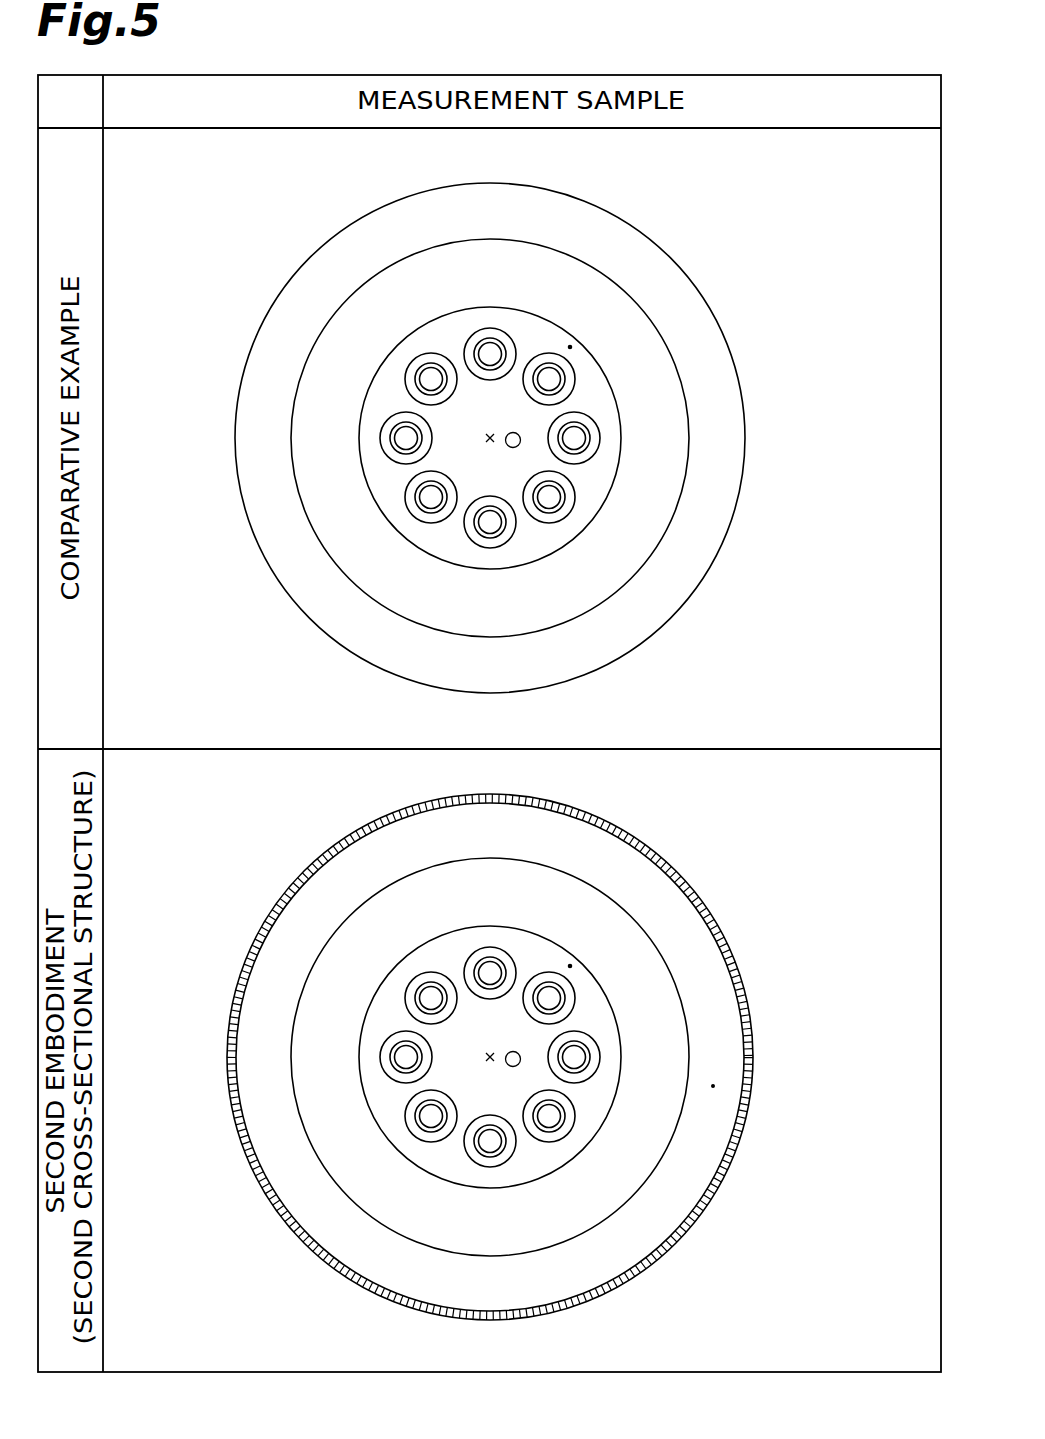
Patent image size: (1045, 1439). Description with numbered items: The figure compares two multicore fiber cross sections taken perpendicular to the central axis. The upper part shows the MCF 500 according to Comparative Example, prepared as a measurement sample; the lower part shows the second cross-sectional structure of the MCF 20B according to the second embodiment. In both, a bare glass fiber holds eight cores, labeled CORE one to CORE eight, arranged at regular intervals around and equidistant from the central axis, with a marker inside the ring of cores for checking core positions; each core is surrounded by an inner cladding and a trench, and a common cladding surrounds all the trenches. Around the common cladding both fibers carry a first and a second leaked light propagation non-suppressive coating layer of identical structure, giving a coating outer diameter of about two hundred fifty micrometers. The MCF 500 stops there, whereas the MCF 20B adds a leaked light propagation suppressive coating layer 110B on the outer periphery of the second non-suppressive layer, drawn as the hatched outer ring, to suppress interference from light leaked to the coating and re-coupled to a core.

The MCF according to Comparative Example 500 is at (762, 295).
The MCF according to the second embodiment 20B is at (506, 1061).
The leaked light propagation suppressive coating layer 110B is at (531, 1057).